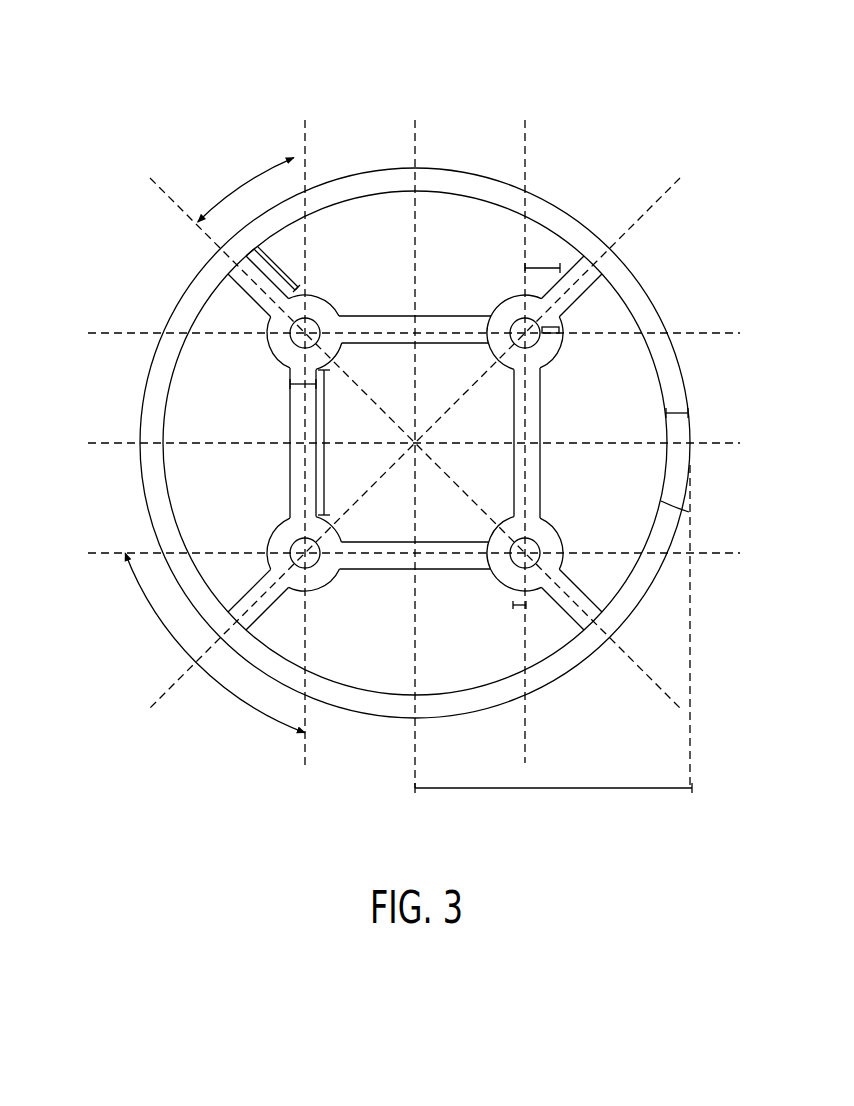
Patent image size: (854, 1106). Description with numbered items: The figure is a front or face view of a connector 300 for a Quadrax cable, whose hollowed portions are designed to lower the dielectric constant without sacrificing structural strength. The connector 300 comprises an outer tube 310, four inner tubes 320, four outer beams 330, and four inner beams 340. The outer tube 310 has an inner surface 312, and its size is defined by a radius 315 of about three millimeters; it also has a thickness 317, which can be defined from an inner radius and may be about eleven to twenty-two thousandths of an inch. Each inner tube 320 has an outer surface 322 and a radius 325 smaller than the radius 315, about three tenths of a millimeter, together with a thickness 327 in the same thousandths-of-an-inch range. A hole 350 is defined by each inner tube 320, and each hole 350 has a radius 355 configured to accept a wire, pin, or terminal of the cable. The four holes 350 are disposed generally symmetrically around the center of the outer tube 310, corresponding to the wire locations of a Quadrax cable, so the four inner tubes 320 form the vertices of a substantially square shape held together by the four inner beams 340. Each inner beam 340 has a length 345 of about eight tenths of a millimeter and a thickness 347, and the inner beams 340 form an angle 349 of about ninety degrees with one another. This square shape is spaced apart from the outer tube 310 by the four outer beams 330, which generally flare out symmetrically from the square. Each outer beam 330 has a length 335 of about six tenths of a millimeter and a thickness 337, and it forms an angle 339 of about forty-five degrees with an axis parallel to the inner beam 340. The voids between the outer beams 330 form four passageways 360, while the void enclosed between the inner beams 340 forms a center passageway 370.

The connector 300 is at (648, 62).
The outer tube 310 is at (678, 460).
The inner surface 312 is at (689, 512).
The radius 315 is at (600, 788).
The thickness 317 is at (678, 408).
The inner tube 320 is at (552, 344).
The outer surface 322 is at (547, 364).
The radius 325 is at (541, 265).
The thickness 327 is at (536, 297).
The outer beam 330 is at (236, 282).
The length 335 is at (278, 267).
The thickness 337 is at (298, 292).
The angle 339 is at (249, 183).
The inner beam 340 is at (298, 482).
The length 345 is at (325, 475).
The thickness 347 is at (292, 388).
The angle 349 is at (158, 620).
The hole 350 is at (516, 568).
The radius 355 is at (517, 608).
The passageway 360 is at (215, 479).
The center passageway 370 is at (460, 527).